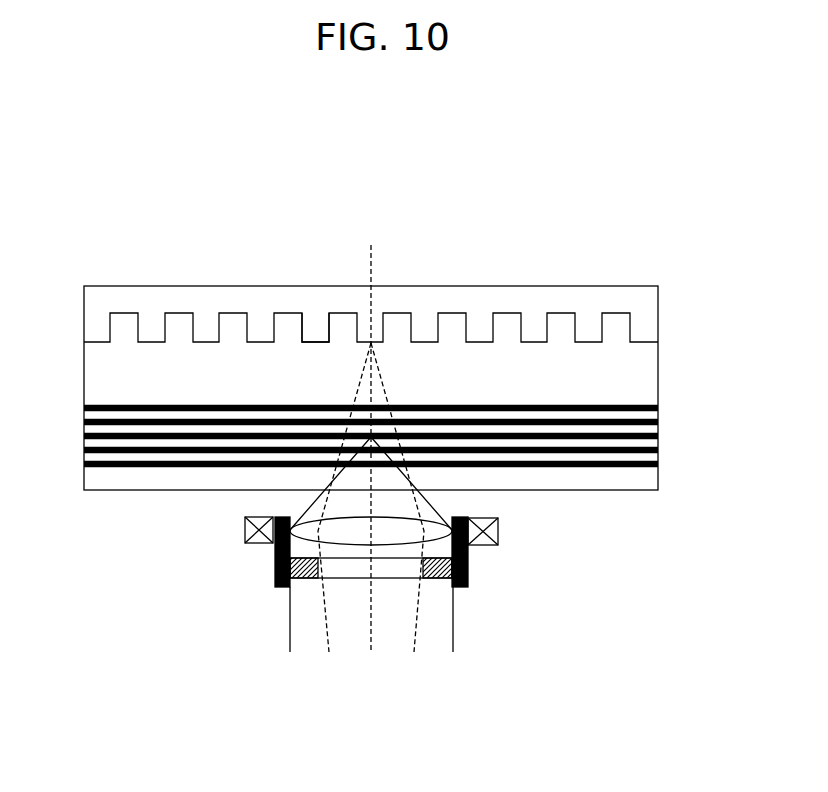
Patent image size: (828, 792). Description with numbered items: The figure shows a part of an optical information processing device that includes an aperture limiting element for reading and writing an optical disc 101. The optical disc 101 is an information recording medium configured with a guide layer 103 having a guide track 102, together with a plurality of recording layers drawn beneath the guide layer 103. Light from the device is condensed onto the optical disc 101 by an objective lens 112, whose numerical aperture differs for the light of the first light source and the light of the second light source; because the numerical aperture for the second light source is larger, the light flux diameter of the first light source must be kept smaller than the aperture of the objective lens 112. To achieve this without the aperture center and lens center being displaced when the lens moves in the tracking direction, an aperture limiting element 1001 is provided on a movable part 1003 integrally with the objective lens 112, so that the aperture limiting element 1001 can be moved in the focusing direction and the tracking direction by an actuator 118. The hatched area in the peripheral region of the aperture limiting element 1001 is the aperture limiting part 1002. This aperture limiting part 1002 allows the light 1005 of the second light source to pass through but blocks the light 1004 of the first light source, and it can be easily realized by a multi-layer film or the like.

The optical disc 101 is at (517, 286).
The guide track 102 is at (180, 312).
The guide layer 103 is at (313, 302).
The objective lens 112 is at (437, 523).
The actuator 118 is at (248, 533).
The aperture limiting element 1001 is at (392, 568).
The aperture limiting part 1002 is at (291, 608).
The movable part 1003 is at (276, 571).
The light 1004 is at (418, 623).
The light 1005 is at (290, 634).